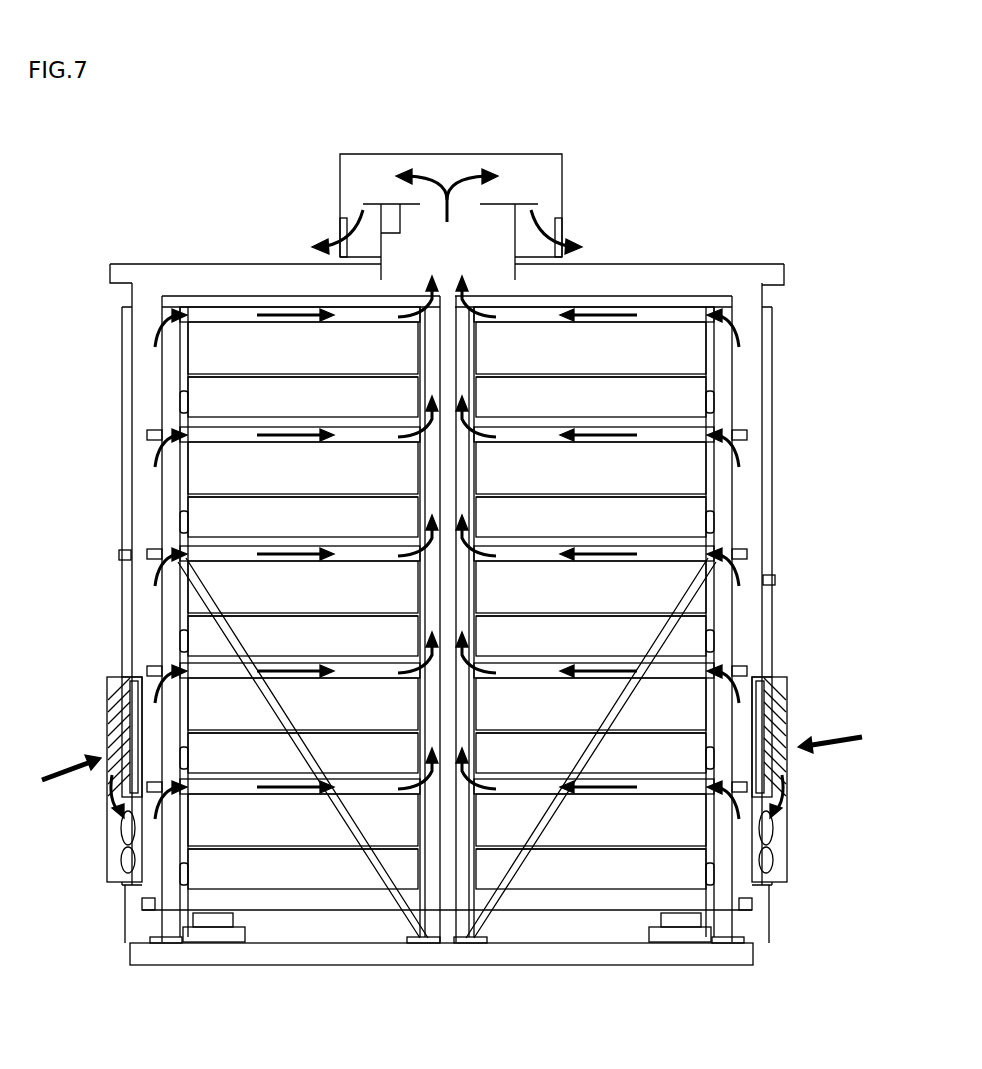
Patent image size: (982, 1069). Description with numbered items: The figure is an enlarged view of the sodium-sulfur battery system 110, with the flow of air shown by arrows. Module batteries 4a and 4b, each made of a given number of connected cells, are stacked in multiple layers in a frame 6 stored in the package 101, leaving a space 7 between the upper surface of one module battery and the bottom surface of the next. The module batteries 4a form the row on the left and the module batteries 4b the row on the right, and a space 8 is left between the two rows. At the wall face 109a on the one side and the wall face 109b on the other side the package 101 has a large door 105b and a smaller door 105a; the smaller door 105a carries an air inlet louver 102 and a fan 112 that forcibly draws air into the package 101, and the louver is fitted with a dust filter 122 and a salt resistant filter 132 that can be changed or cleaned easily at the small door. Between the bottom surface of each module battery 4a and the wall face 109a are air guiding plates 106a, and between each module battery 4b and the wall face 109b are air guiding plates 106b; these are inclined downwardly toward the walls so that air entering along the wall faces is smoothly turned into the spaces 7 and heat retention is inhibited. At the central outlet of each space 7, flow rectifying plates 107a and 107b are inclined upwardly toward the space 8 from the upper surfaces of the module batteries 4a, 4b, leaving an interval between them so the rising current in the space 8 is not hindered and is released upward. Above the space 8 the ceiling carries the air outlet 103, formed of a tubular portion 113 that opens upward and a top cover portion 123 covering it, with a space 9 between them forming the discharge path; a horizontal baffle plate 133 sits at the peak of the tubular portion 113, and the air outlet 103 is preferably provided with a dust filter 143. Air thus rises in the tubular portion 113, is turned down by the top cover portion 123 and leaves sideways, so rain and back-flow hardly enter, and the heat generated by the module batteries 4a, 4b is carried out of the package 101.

The module battery 4a is at (203, 460).
The module battery 4b is at (665, 506).
The frame 6 is at (333, 902).
The space 7 is at (212, 316).
The space 8 is at (447, 368).
The space 9 is at (512, 168).
The package 101 is at (762, 450).
The air inlet louver 102 is at (108, 690).
The air outlet 103 is at (340, 222).
The dust filter 143 is at (557, 222).
The door 105a is at (142, 902).
The door 105b is at (119, 553).
The air guiding plate 106a is at (157, 540).
The air guiding plate 106b is at (747, 432).
The flow rectifying plate 107a is at (432, 462).
The flow rectifying plate 107b is at (502, 455).
The wall face 109a is at (122, 336).
The wall face 109b is at (770, 373).
The sodium-sulfur battery system 110 is at (759, 188).
The fan 112 is at (107, 868).
The tubular portion 113 is at (395, 232).
The dust filter 122 is at (104, 768).
The top cover portion 123 is at (340, 163).
The salt resistant filter 132 is at (120, 727).
The horizontal baffle plate 133 is at (377, 205).